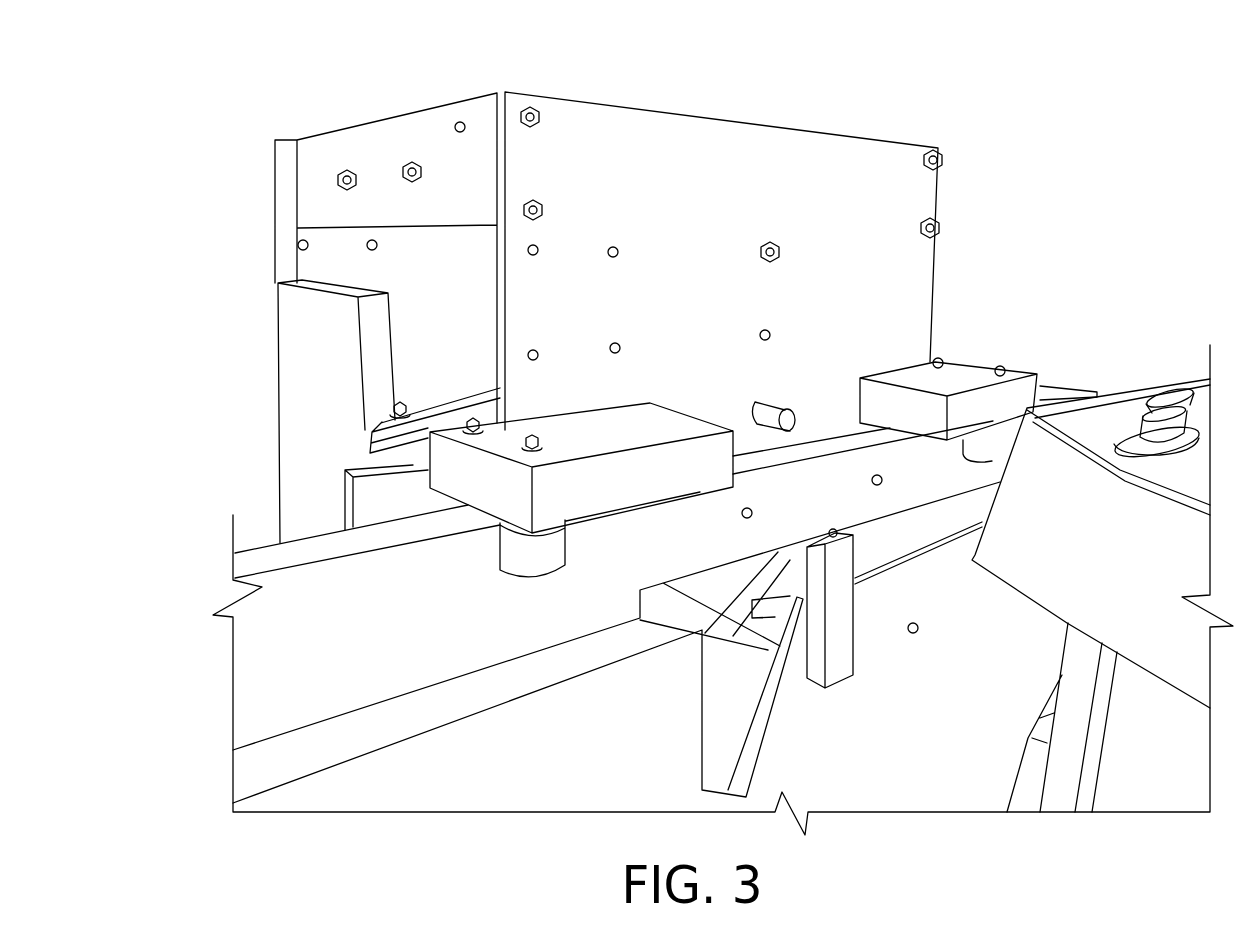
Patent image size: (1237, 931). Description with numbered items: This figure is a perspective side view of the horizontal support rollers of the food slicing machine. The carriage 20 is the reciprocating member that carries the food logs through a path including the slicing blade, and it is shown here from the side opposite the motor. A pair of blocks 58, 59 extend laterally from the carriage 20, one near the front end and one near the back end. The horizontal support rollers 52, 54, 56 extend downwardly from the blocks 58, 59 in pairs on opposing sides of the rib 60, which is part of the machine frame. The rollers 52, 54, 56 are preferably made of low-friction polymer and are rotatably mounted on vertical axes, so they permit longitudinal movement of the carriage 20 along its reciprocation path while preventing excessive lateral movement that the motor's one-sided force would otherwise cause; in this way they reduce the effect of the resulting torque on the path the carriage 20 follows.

The carriage 20 is at (710, 150).
The horizontal support roller 52 is at (993, 442).
The horizontal support roller 54 is at (427, 505).
The horizontal support roller 56 is at (520, 553).
The block 58 is at (590, 430).
The block 59 is at (957, 378).
The rib 60 is at (297, 550).